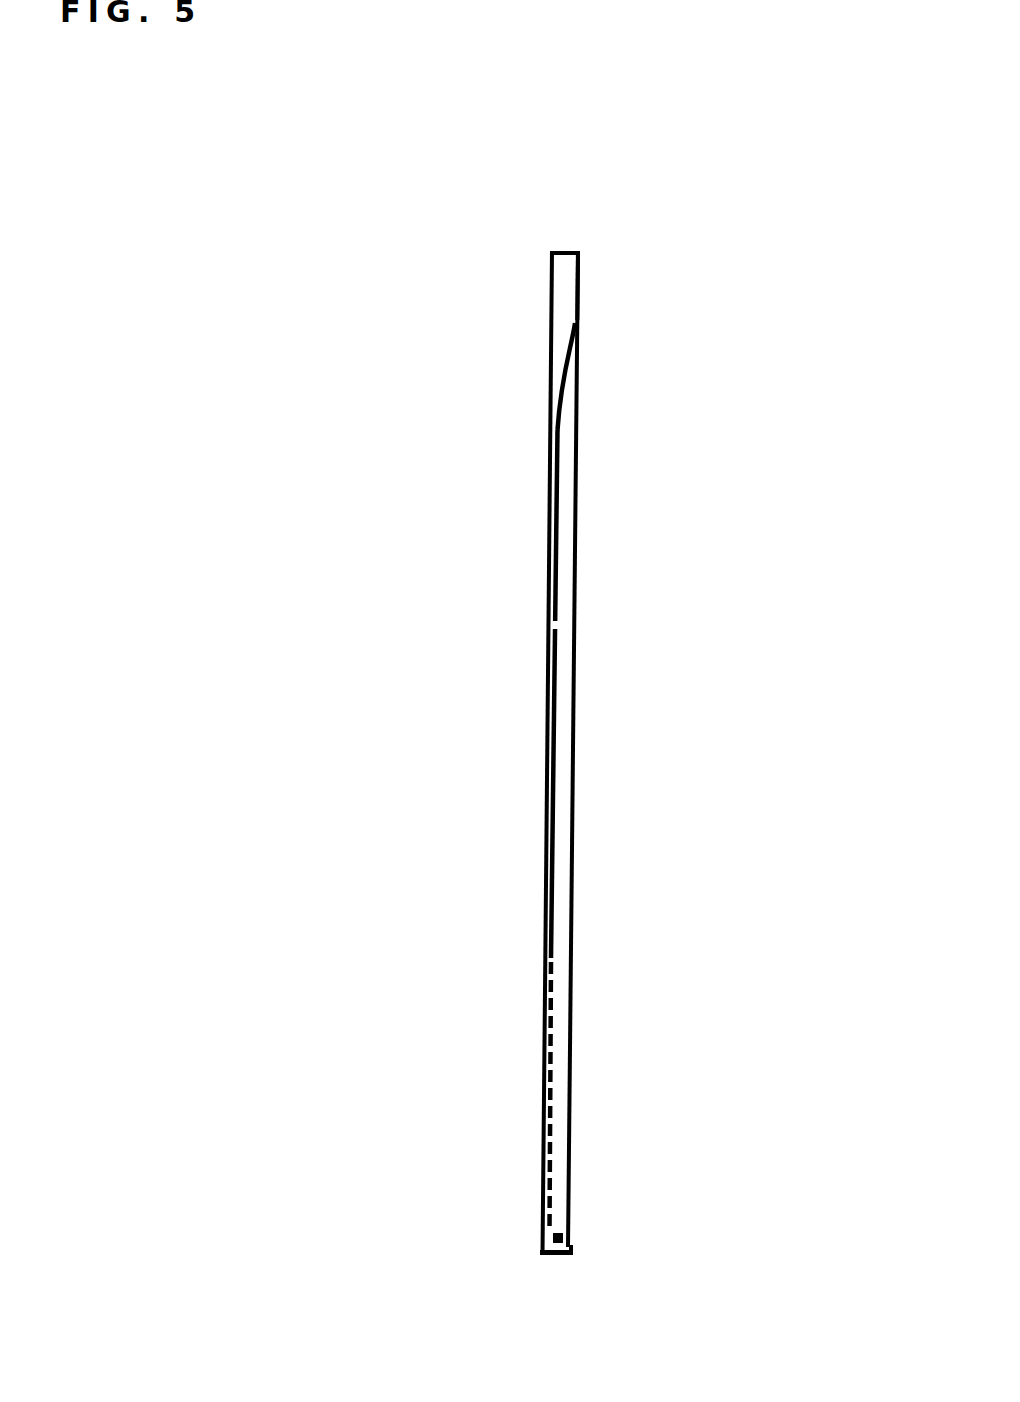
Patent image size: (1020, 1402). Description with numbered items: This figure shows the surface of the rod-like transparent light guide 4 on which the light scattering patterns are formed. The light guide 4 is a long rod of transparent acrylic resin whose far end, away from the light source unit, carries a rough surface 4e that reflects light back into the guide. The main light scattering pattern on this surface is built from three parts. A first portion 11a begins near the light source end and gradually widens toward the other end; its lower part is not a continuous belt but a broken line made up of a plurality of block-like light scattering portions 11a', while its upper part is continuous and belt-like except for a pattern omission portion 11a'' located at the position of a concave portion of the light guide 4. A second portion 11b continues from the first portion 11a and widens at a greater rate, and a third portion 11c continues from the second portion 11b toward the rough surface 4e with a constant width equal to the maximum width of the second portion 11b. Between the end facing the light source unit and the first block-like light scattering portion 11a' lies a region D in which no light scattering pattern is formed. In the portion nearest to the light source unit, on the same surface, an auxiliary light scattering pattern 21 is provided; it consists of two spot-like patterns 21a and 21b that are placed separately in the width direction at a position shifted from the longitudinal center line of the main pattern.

The rod-like transparent light guide 4 is at (570, 547).
The rough surface 4e is at (561, 250).
The first portion 11a is at (483, 694).
The block-like light scattering portion 11a' is at (464, 1097).
The pattern omission portion 11a'' is at (482, 591).
The second portion 11b is at (568, 335).
The third portion 11c is at (567, 281).
The auxiliary light scattering pattern 21 is at (560, 1236).
The spot-like pattern 21a is at (542, 1255).
The spot-like pattern 21b is at (562, 1255).
The region where no light scattering pattern is formed D is at (547, 1240).